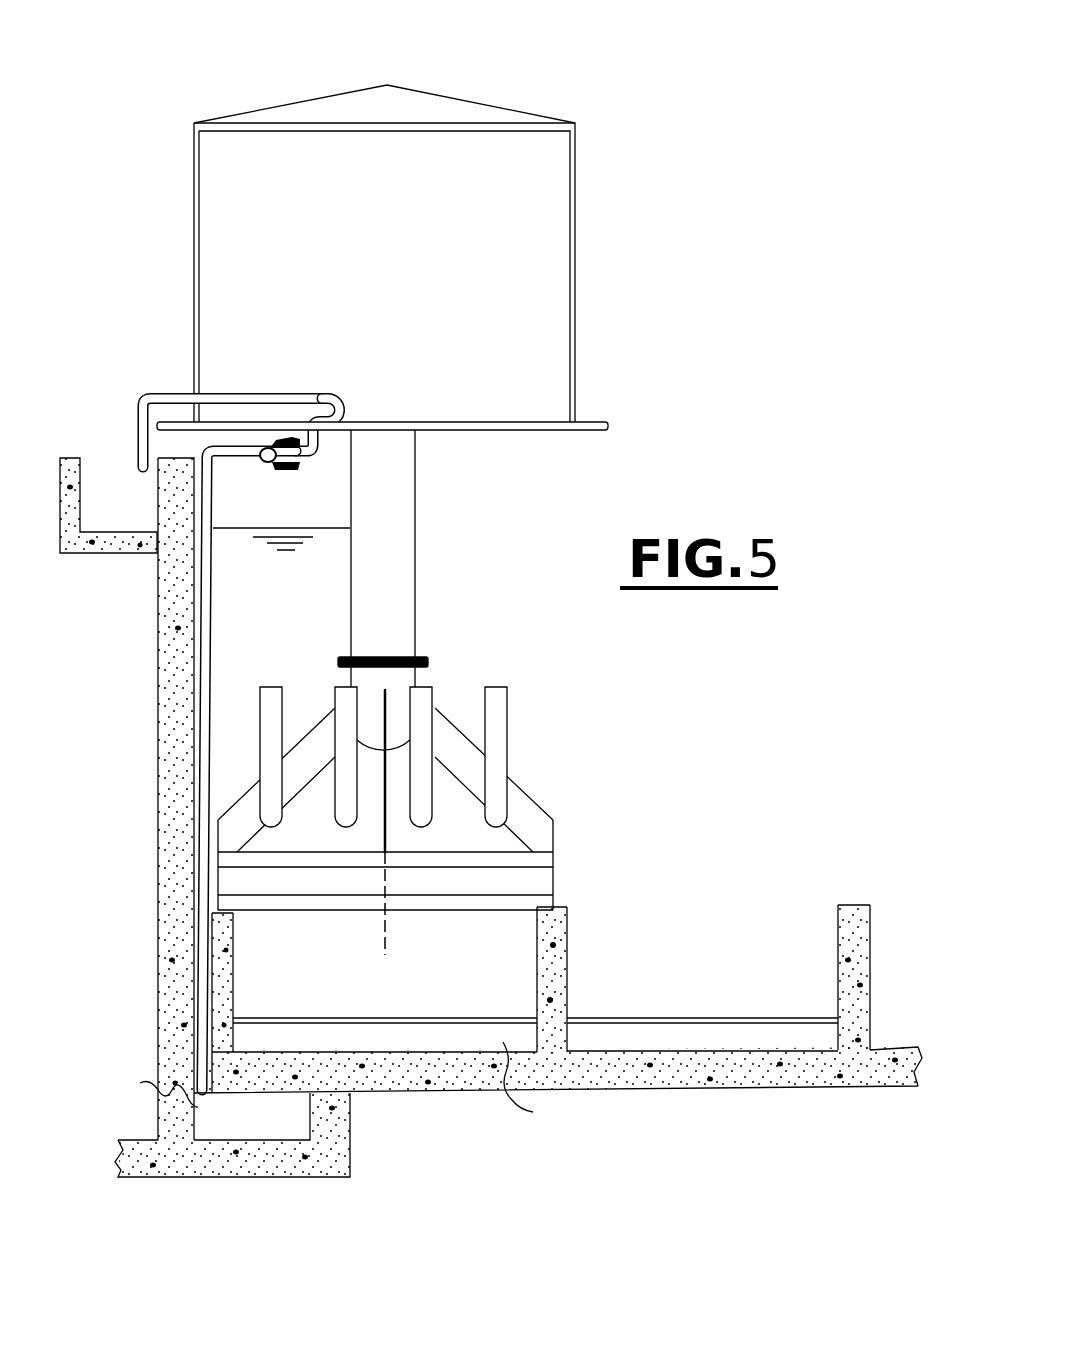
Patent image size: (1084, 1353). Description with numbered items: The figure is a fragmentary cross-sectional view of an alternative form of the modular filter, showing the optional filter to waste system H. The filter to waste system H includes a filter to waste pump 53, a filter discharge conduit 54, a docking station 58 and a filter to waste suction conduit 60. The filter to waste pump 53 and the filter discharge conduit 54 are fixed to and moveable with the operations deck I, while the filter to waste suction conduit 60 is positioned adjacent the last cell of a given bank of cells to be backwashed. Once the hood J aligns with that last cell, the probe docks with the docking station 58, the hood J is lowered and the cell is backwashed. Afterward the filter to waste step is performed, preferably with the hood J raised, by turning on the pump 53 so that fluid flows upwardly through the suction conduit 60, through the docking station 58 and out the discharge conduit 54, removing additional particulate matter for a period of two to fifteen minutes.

The operations deck I is at (585, 233).
The filter to waste system H is at (333, 487).
The hood J is at (543, 778).
The filter to waste pump 53 is at (340, 398).
The filter discharge conduit 54 is at (136, 394).
The docking station 58 is at (268, 474).
The filter to waste suction conduit 60 is at (212, 608).